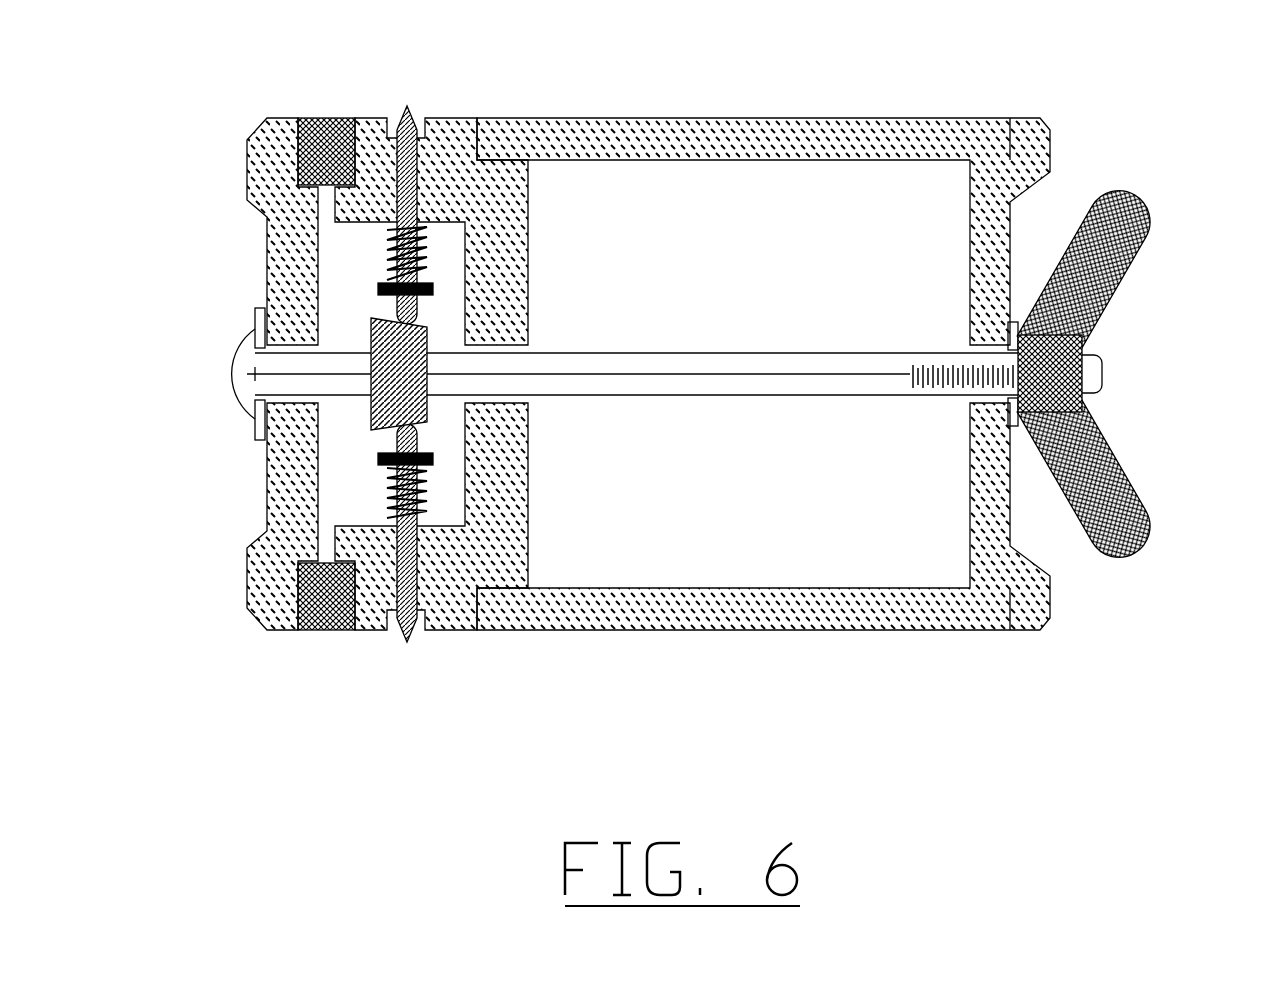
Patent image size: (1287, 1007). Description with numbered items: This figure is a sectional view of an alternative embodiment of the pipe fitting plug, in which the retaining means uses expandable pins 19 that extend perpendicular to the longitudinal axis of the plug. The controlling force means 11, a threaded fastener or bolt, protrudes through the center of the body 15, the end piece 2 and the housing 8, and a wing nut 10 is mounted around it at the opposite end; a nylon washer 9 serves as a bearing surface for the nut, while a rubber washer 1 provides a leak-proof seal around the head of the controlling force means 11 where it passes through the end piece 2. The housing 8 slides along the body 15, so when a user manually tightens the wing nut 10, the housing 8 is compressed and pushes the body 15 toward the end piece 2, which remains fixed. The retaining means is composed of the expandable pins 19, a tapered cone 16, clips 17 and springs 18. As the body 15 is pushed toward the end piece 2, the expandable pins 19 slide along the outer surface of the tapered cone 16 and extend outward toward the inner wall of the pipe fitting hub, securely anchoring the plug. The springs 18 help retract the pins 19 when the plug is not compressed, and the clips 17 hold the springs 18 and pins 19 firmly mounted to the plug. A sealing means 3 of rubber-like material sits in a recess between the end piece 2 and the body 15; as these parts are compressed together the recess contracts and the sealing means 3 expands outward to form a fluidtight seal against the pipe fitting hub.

The rubber washer 1 is at (255, 443).
The end piece 2 is at (253, 120).
The sealing means 3 is at (332, 104).
The housing 8 is at (748, 115).
The nylon washer 9 is at (1018, 430).
The wing nut 10 is at (1153, 210).
The controlling force means 11 is at (1107, 380).
The body 15 is at (453, 115).
The tapered cone 16 is at (365, 330).
The clips 17 is at (433, 290).
The spring 18 is at (430, 500).
The expandable pins 19 is at (395, 632).